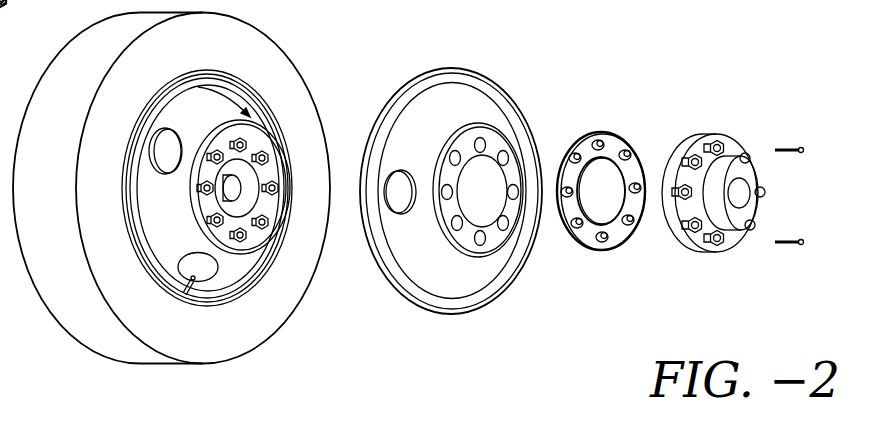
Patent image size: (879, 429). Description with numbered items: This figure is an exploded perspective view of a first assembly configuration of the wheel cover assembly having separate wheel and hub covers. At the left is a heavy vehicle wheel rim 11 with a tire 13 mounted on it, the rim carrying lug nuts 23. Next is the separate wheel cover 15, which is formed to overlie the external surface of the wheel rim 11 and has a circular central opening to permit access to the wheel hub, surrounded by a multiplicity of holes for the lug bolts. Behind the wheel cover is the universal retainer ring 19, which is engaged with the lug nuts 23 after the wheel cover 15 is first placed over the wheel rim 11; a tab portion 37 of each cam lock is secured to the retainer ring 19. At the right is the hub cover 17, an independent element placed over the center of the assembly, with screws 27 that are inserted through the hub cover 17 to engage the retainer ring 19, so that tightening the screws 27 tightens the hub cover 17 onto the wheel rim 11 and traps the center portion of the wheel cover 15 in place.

The tire 13 is at (258, 33).
The wheel rim 11 is at (196, 86).
The lug nuts 23 is at (264, 153).
The wheel cover 15 is at (487, 80).
The retainer ring 19 is at (610, 132).
The tab portion 37 is at (626, 153).
The hub cover 17 is at (711, 134).
The screws 27 is at (788, 240).